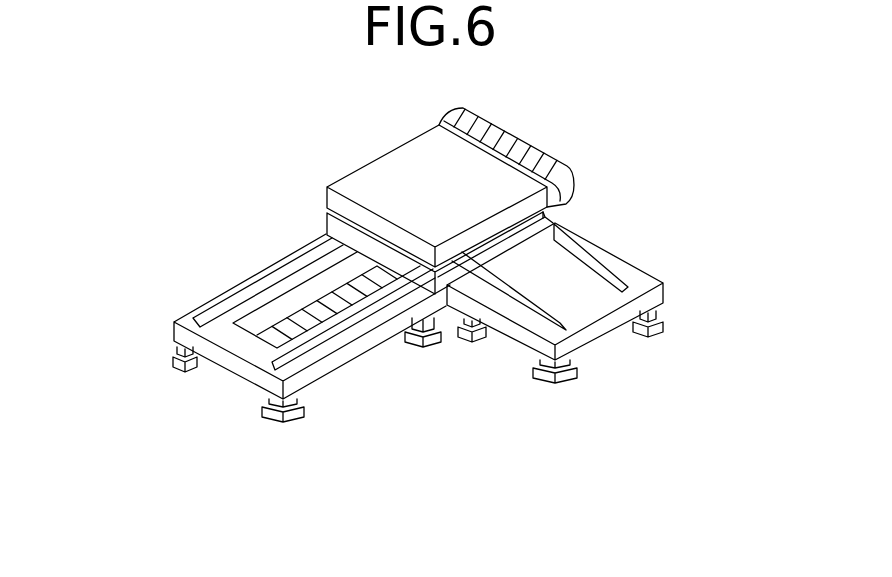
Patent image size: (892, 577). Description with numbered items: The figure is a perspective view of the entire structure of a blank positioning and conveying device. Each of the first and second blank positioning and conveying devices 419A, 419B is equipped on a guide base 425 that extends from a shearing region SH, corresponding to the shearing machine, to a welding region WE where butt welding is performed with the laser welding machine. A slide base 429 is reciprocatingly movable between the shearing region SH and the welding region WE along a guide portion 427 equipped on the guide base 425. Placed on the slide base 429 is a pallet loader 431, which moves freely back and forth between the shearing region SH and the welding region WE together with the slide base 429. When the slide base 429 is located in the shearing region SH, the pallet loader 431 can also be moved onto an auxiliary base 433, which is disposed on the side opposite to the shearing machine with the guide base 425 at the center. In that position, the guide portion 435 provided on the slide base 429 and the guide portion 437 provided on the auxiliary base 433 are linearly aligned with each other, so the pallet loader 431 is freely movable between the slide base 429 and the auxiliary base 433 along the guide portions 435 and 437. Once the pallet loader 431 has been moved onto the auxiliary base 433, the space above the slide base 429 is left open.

The first blank positioning and conveying device 419A is at (422, 259).
The second blank positioning and conveying device 419B is at (430, 259).
The shearing region SH is at (402, 171).
The welding region WE is at (233, 224).
The guide base 425 is at (237, 377).
The guide portion 427 is at (200, 318).
The slide base 429 is at (425, 282).
The pallet loader 431 is at (492, 168).
The auxiliary base 433 is at (667, 296).
The guide portion 435 is at (528, 240).
The guide portion 437 is at (570, 314).